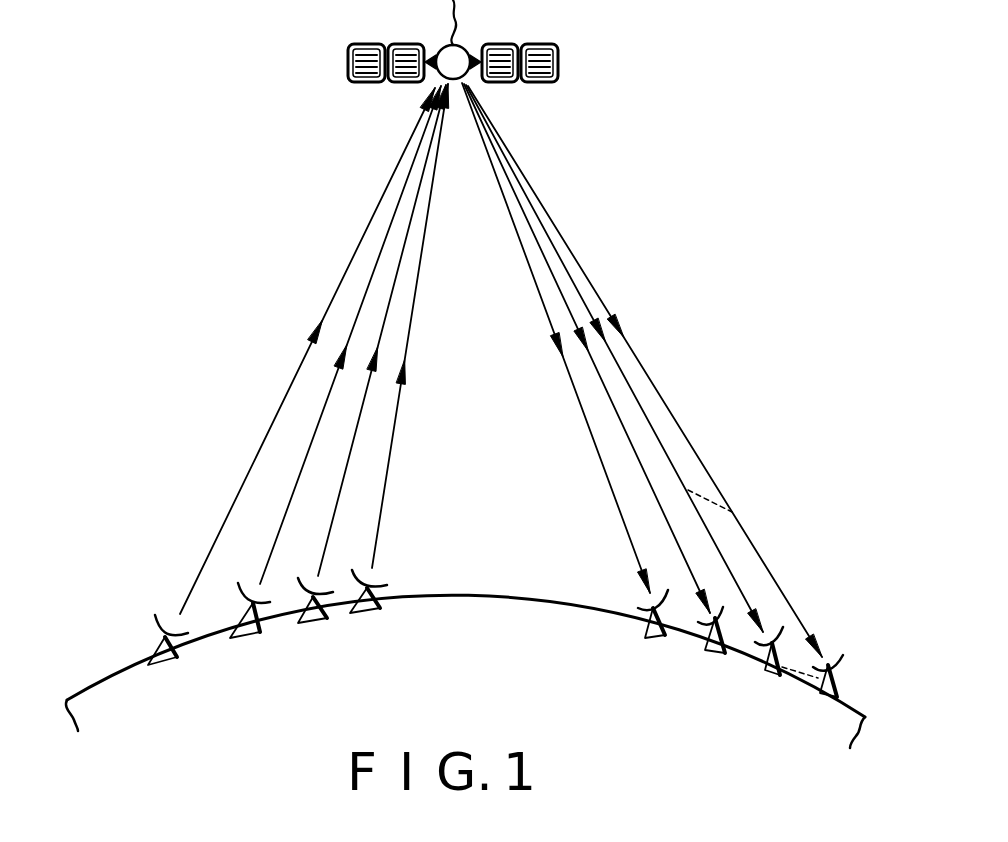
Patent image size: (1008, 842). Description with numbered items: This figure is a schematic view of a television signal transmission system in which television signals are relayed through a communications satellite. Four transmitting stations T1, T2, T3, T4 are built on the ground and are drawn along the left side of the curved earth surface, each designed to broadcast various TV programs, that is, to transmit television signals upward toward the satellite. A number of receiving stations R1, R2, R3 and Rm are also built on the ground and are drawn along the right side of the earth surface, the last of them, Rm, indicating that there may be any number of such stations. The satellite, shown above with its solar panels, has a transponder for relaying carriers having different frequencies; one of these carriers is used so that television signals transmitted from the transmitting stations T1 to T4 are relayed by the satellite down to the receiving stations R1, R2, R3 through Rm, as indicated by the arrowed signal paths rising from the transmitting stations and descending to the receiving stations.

The transmitting station T1 is at (167, 663).
The transmitting station T2 is at (252, 638).
The transmitting station T3 is at (317, 620).
The transmitting station T4 is at (373, 610).
The receiving station R1 is at (655, 637).
The receiving station R2 is at (707, 650).
The receiving station R3 is at (770, 672).
The receiving station Rm is at (827, 697).